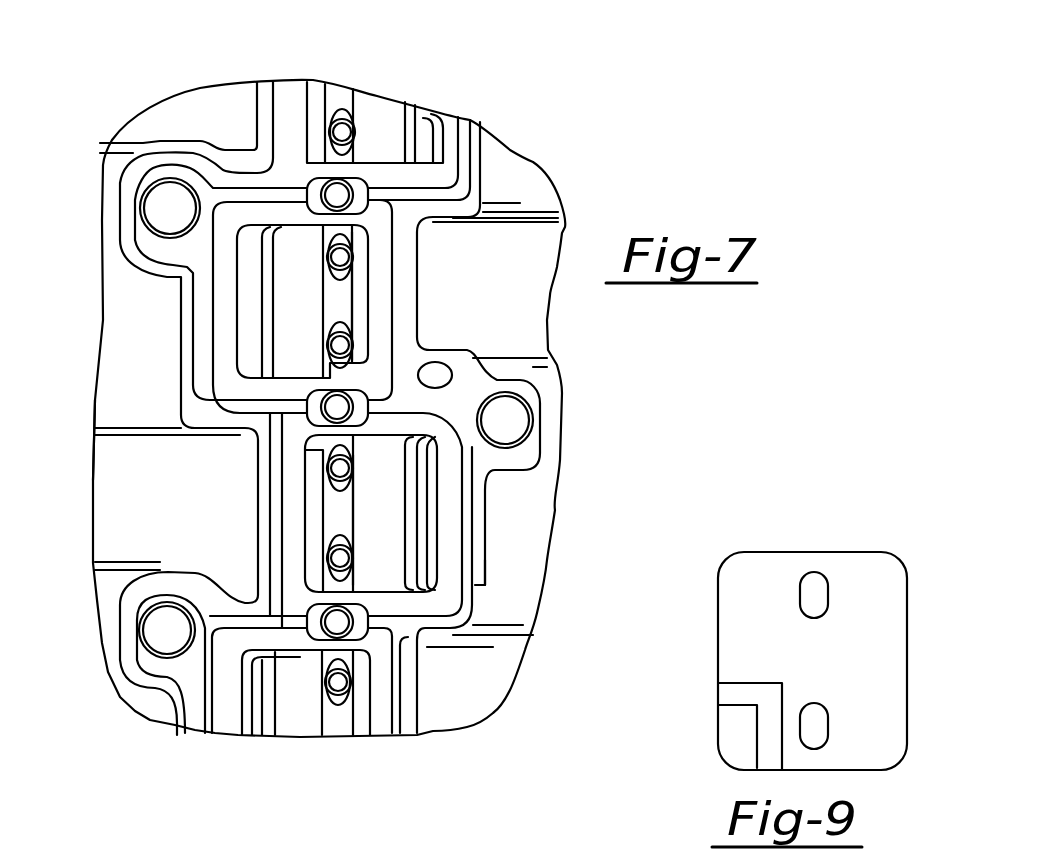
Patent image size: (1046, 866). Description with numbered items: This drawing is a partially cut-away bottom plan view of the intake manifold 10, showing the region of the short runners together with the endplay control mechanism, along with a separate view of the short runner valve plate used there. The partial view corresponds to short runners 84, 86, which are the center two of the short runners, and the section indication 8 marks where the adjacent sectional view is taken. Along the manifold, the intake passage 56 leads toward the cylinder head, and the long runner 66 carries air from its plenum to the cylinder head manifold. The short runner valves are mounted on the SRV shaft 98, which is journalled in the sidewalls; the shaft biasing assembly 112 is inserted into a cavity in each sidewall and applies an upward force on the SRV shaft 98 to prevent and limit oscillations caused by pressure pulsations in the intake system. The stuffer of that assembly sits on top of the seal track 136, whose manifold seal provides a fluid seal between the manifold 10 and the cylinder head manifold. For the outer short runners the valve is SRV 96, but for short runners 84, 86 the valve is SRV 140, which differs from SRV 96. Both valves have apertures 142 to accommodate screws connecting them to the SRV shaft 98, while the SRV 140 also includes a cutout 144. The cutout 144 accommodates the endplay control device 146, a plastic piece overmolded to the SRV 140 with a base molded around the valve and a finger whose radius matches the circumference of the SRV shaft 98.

In FIG. 7, the intake manifold 10 is at (478, 38).
In FIG. 7, the intake passage 56 is at (118, 543).
In FIG. 7, the long runner 66 is at (530, 297).
In FIG. 7, the short runner 84 is at (440, 490).
In FIG. 7, the short runner 86 is at (238, 310).
In FIG. 7, the SRV (short runner valve) 96 is at (377, 110).
In FIG. 7, the SRV shaft 98 is at (337, 723).
In FIG. 7, the shaft biasing assembly 112 is at (303, 165).
In FIG. 7, the seal track 136 is at (480, 622).
In FIG. 7, the SRV (short runner valve plate) 140 is at (285, 350).
In FIG. 9, the SRV (short runner valve plate) 140 is at (852, 570).
In FIG. 7, the apertures 142 is at (340, 407).
In FIG. 9, the apertures 142 is at (807, 580).
In FIG. 9, the cutout 144 is at (750, 743).
In FIG. 7, the endplay control device 146 is at (365, 317).
In FIG. 7, the section line 8- 8 is at (62, 465).